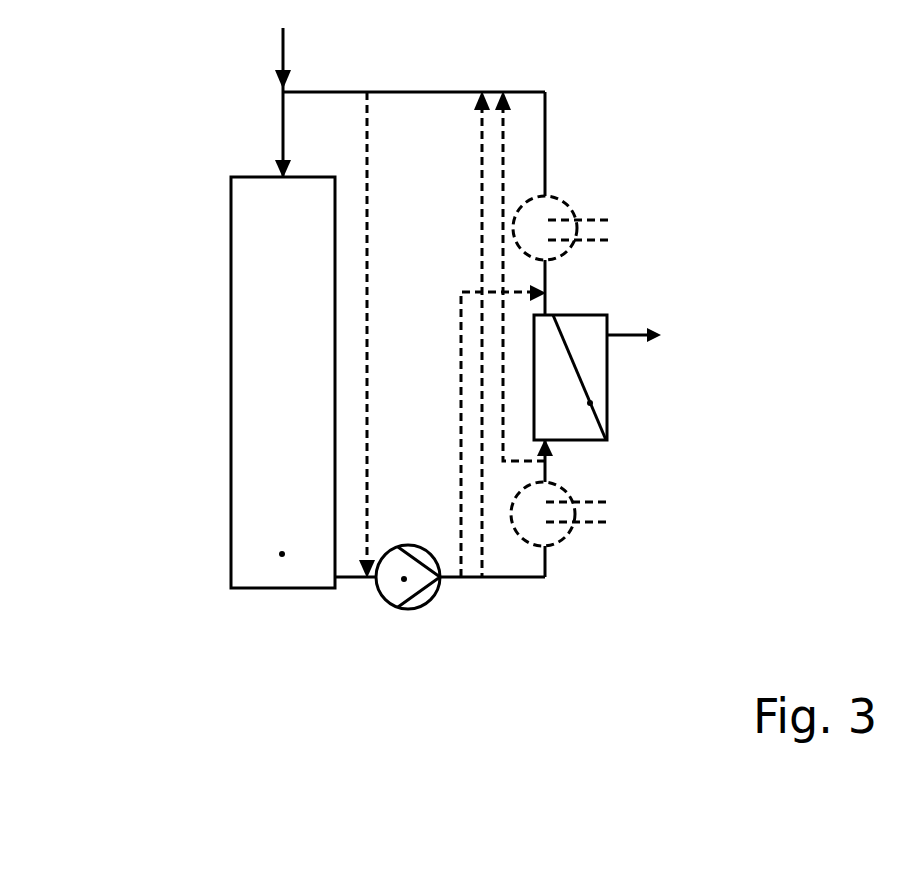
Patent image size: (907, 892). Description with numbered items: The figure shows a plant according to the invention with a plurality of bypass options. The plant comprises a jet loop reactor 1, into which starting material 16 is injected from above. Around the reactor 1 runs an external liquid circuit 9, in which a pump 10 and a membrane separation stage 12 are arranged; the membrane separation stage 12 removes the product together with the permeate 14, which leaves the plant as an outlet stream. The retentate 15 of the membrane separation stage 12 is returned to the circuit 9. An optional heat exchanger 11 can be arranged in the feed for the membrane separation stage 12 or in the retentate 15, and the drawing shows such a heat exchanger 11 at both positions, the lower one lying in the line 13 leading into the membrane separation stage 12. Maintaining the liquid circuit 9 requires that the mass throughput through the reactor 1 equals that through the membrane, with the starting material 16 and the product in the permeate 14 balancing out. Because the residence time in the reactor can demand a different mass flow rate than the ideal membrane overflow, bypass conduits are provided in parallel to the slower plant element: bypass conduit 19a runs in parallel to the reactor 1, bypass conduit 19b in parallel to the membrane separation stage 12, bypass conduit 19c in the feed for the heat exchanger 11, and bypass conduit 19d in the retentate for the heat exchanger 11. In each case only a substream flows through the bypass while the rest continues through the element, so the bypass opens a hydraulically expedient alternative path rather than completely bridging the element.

The jet loop reactor 1 is at (282, 554).
The external liquid circuit 9 is at (436, 273).
The pump 10 is at (404, 579).
The heat exchanger 11 is at (640, 201).
The membrane separation stage 12 is at (600, 408).
The heat exchanger inlet line 13 is at (550, 465).
The permeate 14 is at (632, 345).
The retentate 15 is at (550, 279).
The starting material 16 is at (283, 62).
The bypass conduit 19a is at (455, 279).
The bypass conduit 19b is at (475, 362).
The bypass conduit 19c is at (460, 434).
The bypass conduit 19d is at (510, 154).